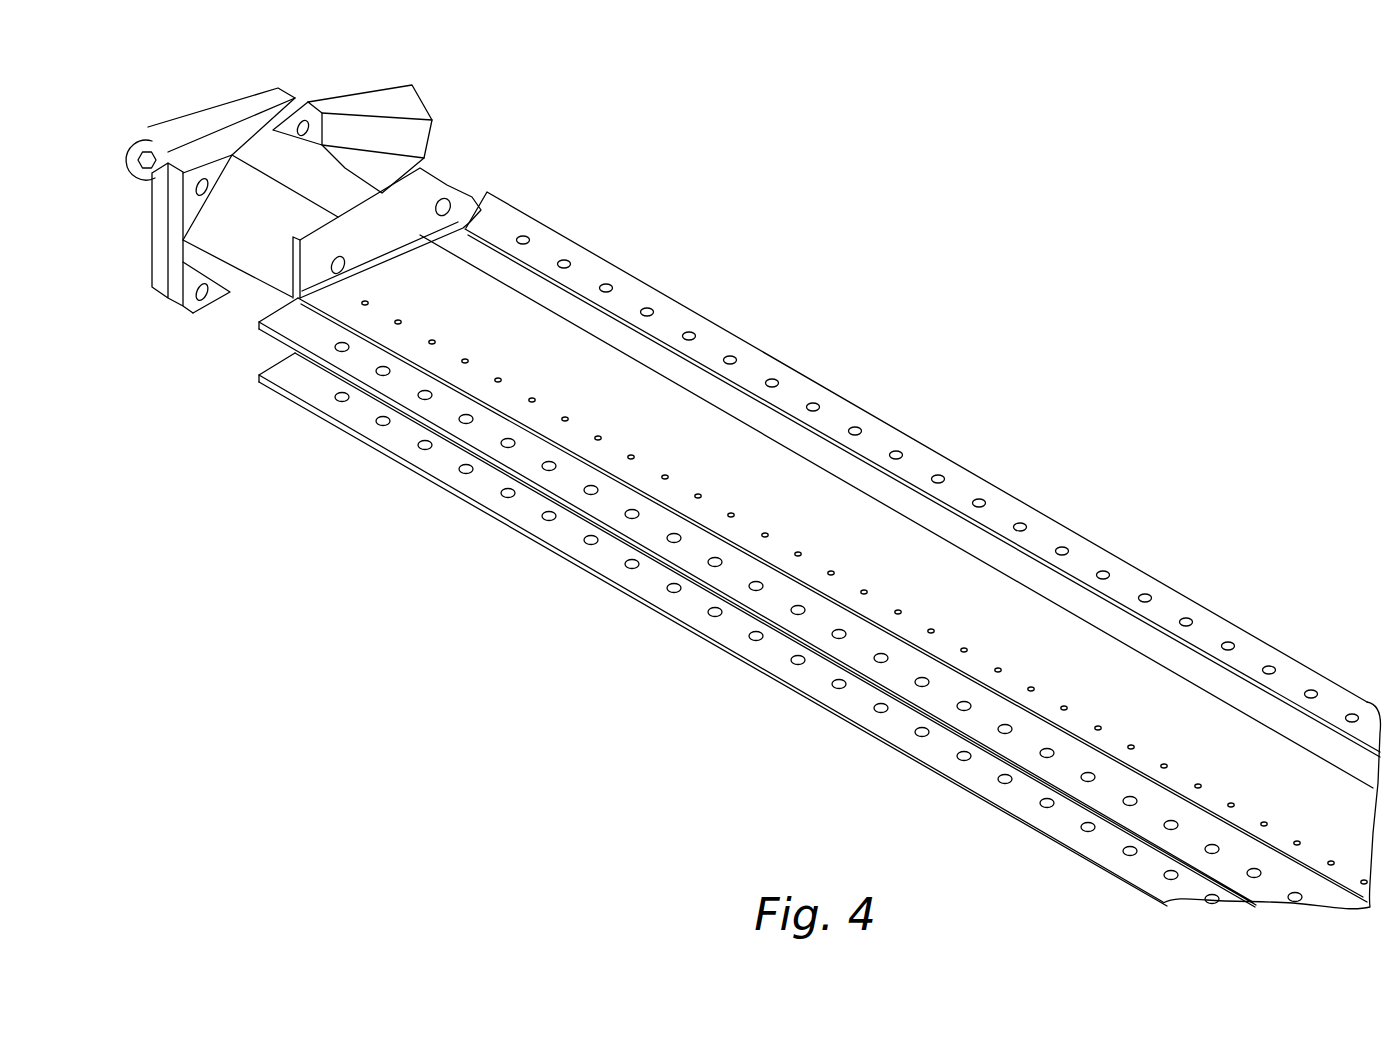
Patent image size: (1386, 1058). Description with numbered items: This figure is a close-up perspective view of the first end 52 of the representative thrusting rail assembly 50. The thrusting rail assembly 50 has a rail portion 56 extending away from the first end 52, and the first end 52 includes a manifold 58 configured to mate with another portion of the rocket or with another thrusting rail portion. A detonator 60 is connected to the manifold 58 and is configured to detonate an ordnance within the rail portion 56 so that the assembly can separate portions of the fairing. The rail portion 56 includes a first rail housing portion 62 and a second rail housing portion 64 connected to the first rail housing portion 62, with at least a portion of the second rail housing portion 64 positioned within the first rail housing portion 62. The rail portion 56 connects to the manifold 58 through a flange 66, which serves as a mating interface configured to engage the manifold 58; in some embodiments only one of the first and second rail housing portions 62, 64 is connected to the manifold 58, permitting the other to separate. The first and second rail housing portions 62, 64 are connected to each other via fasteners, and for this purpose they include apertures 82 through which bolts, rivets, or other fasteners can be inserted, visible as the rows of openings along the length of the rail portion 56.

The thrusting rail assembly 50 is at (955, 200).
The first end 52 is at (458, 115).
The rail portion 56 is at (1072, 488).
The manifold 58 is at (200, 228).
The detonator 60 is at (357, 103).
The first rail housing portion 62 is at (640, 350).
The second rail housing portion 64 is at (347, 360).
The flange 66 is at (441, 190).
The apertures 82 is at (597, 440).